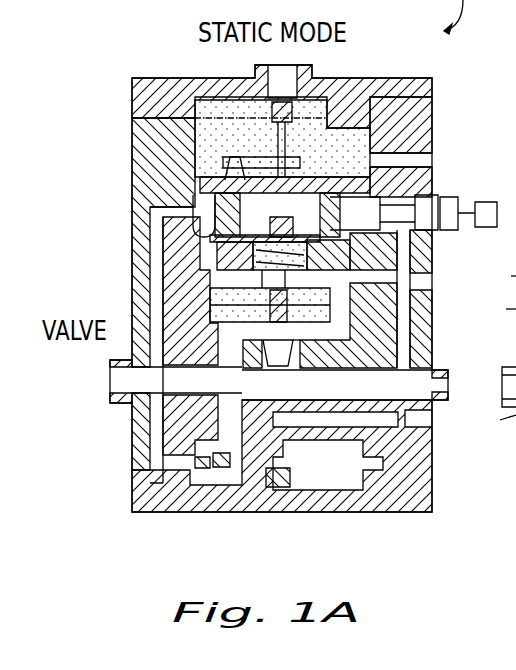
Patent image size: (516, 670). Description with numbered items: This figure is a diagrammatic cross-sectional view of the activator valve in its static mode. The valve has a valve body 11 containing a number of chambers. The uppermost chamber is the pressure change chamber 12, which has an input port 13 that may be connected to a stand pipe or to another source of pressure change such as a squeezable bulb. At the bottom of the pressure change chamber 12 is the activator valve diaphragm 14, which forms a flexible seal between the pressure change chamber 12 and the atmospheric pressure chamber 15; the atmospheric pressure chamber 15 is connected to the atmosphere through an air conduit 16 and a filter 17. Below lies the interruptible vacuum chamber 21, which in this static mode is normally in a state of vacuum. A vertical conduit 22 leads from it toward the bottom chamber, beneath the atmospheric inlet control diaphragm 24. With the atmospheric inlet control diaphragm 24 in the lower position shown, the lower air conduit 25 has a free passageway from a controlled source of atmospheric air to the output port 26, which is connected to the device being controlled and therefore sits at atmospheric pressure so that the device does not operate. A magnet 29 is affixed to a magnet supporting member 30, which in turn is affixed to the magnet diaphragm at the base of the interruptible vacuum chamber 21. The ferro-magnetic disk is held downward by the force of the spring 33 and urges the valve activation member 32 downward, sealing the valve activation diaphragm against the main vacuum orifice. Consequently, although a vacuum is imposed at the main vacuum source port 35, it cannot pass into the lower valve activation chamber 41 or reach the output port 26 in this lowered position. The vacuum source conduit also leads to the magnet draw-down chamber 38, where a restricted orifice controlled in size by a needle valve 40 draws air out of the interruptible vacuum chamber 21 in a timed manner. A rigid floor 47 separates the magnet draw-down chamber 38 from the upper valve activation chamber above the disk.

The valve body 11 is at (435, 134).
The pressure change chamber 12 is at (398, 78).
The input port 13 is at (256, 70).
The activator valve diaphragm 14 is at (355, 83).
The atmospheric pressure chamber 15 is at (400, 96).
The air conduit 16 is at (435, 160).
The filter 17 is at (420, 112).
The interruptible vacuum chamber 21 is at (132, 184).
The vertical conduit 22 is at (513, 437).
The atmospheric inlet control diaphragm 24 is at (208, 470).
The lower air conduit 25 is at (428, 424).
The output port 26 is at (117, 403).
The magnet 29 is at (497, 312).
The magnet supporting member 30 is at (500, 281).
The valve activation member 32 is at (230, 360).
The spring 33 is at (330, 298).
The main vacuum source port 35 is at (452, 387).
The magnet draw-down chamber 38 is at (420, 281).
The needle valve 40 is at (483, 198).
The lower valve activation chamber 41 is at (150, 440).
The rigid floor 47 is at (132, 280).